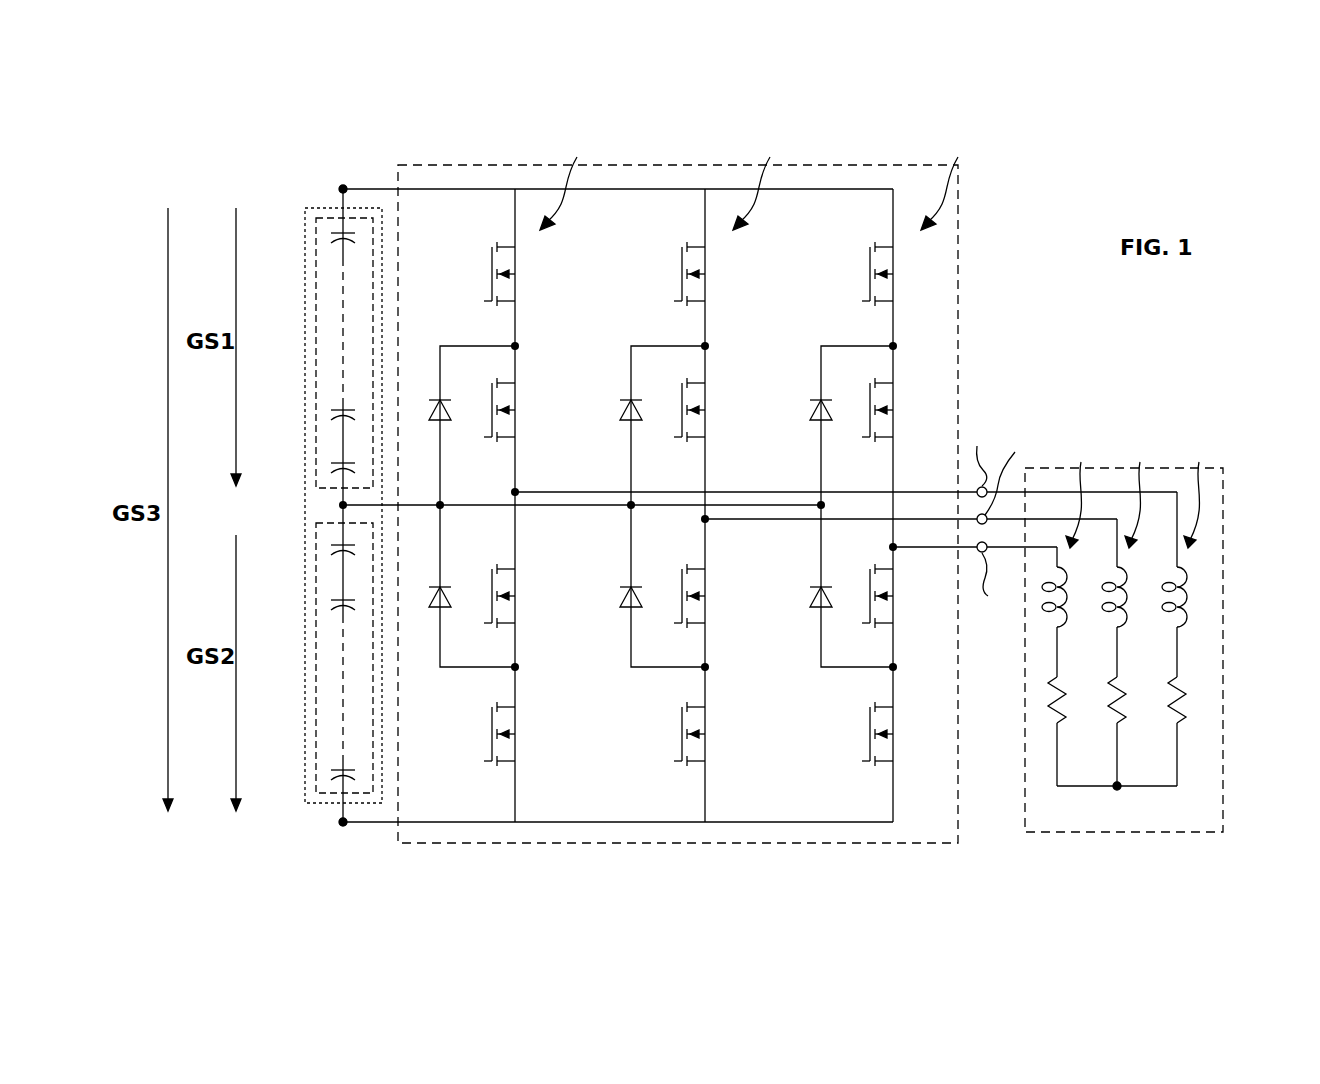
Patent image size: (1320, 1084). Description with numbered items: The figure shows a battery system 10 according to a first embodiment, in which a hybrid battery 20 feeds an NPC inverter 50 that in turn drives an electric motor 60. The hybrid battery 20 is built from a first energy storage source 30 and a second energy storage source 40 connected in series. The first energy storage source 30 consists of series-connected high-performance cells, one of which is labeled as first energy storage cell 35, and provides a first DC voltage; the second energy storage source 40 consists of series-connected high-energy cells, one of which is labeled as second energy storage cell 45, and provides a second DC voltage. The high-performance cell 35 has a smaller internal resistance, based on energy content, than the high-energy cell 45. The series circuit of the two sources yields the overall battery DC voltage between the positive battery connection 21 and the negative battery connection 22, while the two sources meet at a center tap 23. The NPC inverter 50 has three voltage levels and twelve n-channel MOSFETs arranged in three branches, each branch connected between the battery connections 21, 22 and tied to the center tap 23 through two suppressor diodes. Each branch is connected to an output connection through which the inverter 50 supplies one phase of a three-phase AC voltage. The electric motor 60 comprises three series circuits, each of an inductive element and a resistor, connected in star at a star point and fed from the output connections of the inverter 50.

The battery system 10 is at (305, 158).
The hybrid battery 20 is at (312, 205).
The positive battery connection 21 is at (343, 189).
The negative battery connection 22 is at (343, 822).
The center tap 23 is at (343, 505).
The first energy storage source 30 is at (316, 284).
The first energy storage cell 35 is at (343, 240).
The second energy storage source 40 is at (316, 765).
The second energy storage cell 45 is at (343, 548).
The NPC inverter 50 is at (958, 238).
The electric motor 60 is at (1223, 652).